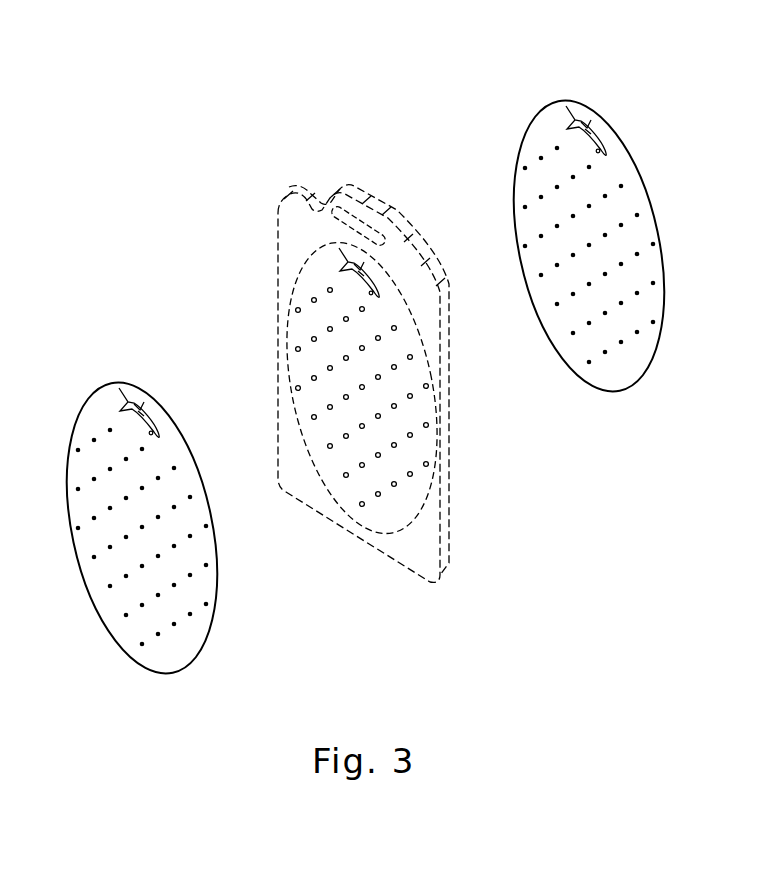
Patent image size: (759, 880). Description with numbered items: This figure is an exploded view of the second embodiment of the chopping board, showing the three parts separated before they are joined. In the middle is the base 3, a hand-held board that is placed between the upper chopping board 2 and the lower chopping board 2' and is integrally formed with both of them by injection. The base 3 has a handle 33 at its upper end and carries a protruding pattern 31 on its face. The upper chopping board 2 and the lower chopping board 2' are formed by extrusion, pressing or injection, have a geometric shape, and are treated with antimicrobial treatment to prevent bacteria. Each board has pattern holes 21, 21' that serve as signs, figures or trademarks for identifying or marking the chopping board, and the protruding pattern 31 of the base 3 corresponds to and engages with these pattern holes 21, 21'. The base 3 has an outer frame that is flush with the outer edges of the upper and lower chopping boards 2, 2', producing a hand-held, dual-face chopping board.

The upper chopping board 2 is at (160, 528).
The pattern holes 21 is at (159, 378).
The lower chopping board 2' is at (610, 246).
The pattern holes 21' is at (610, 97).
The base 3 is at (438, 443).
The protruding pattern 31 is at (347, 272).
The handle 33 is at (357, 230).